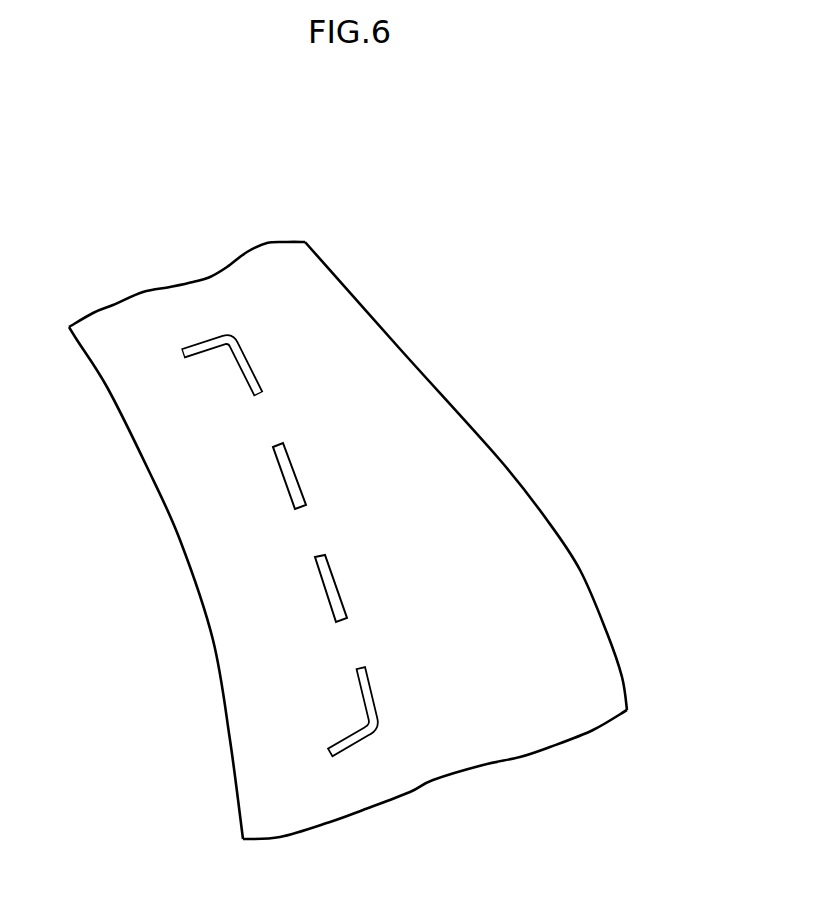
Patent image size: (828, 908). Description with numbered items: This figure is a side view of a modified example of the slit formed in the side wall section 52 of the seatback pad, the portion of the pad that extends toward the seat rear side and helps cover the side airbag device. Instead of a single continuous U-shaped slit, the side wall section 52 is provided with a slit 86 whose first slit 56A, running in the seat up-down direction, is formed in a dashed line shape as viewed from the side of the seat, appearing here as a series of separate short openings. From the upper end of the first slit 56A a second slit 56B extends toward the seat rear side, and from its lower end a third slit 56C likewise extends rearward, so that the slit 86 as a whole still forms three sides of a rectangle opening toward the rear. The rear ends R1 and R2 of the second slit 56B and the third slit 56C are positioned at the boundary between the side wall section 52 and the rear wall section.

The side wall section 52 is at (382, 540).
The slit 86 is at (530, 577).
The first slit 56A is at (363, 685).
The second slit 56B is at (203, 343).
The third slit 56C is at (353, 745).
The rear end of the second slit R1 is at (184, 352).
The rear end of the third slit R2 is at (330, 753).